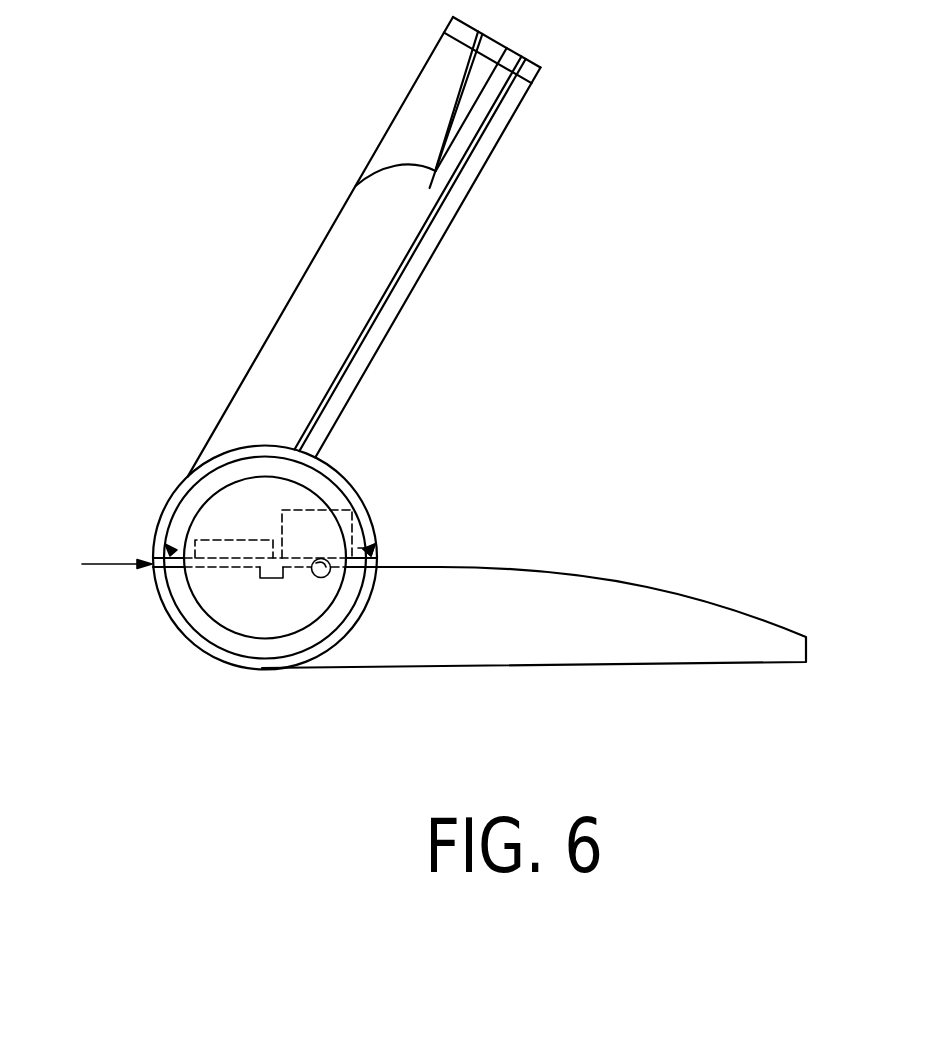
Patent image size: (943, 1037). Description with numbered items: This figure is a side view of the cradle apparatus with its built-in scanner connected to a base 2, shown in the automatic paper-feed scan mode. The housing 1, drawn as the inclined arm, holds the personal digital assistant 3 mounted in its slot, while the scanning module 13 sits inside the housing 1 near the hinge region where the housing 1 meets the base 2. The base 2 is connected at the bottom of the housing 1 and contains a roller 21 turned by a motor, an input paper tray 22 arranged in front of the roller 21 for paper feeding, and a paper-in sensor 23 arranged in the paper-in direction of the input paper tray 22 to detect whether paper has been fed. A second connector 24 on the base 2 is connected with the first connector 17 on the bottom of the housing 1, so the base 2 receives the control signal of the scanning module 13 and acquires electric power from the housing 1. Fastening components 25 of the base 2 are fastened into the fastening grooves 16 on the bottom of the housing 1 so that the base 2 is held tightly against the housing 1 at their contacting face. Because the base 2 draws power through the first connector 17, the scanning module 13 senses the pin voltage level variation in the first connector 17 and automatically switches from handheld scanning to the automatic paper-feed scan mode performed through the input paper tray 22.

The housing 1 is at (400, 363).
The base 2 is at (655, 578).
The personal digital assistant 3 is at (423, 92).
The scanning module 13 is at (317, 533).
The fastening grooves 16 is at (380, 541).
The first connector 17 is at (237, 537).
The roller 21 is at (320, 578).
The input paper tray 22 is at (222, 563).
The paper-in sensor 23 is at (263, 577).
The second connector 24 is at (237, 537).
The fastening components 25 is at (380, 541).